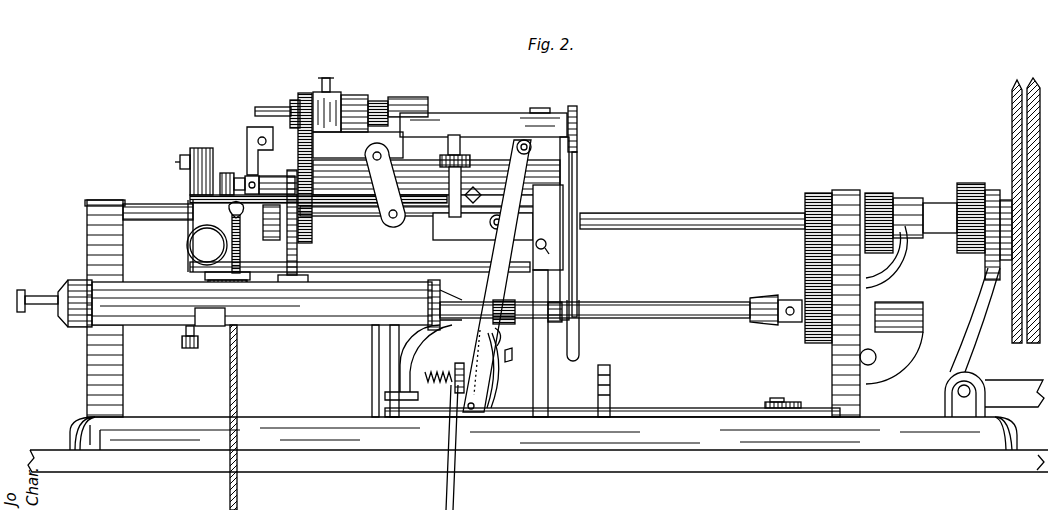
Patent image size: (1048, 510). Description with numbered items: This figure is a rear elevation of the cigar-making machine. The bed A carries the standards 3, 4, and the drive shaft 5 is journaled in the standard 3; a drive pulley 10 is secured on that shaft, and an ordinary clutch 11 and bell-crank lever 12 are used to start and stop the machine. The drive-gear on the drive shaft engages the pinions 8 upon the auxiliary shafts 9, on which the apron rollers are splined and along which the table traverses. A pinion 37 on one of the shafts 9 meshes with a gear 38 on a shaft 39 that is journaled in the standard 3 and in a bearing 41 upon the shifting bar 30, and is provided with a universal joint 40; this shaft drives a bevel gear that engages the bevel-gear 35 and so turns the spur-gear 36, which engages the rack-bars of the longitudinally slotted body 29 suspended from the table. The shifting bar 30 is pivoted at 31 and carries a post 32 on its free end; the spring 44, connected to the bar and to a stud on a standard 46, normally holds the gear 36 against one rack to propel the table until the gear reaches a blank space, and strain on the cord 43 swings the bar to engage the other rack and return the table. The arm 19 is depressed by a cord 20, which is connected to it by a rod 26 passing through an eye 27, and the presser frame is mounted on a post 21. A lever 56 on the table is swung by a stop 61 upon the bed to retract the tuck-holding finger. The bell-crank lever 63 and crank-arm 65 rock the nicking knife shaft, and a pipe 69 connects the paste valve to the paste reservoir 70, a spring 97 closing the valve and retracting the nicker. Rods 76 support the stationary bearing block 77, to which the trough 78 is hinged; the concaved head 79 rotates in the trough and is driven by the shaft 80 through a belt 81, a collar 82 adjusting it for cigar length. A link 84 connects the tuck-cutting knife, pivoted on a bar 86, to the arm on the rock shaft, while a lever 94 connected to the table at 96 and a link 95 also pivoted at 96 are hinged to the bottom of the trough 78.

The standard 3 is at (877, 303).
The standard 4 is at (105, 308).
The drive shaft 5 is at (925, 218).
The pinion 8 is at (879, 212).
The auxiliary shaft 9 is at (464, 217).
The drive pulley 10 is at (1009, 210).
The clutch 11 is at (984, 223).
The bell-crank lever 12 is at (994, 342).
The arm 19 is at (431, 221).
The cord 20 is at (244, 417).
The post 21 is at (466, 176).
The rod 26 is at (192, 198).
The eye 27 is at (234, 246).
The longitudinally slotted body 29 is at (360, 263).
The shifting bar 30 is at (612, 403).
The pivot 31 is at (783, 394).
The post 32 is at (503, 370).
The bevel-gear 35 is at (505, 337).
The spur-gear 36 is at (498, 301).
The pinion 37 is at (815, 258).
The gear 38 is at (790, 328).
The shaft 39 is at (595, 302).
The universal joint 40 is at (764, 301).
The bearing 41 is at (517, 358).
The cord 43 is at (465, 447).
The spring 44 is at (438, 367).
The standard 46 is at (412, 371).
The lever 56 is at (586, 330).
The stop 61 is at (616, 387).
The bell-crank lever 63 is at (189, 171).
The crank-arm 65 is at (240, 172).
The pipe 69 is at (297, 230).
The paste reservoir 70 is at (228, 305).
The rod 76 is at (385, 185).
The bearing block 77 is at (357, 118).
The trough 78 is at (483, 122).
The concaved head 79 is at (384, 105).
The shaft 80 is at (272, 101).
The belt 81 is at (308, 158).
The collar 82 is at (289, 105).
The link 84 is at (573, 229).
The bar 86 is at (577, 112).
The lever 94 is at (497, 298).
The link 95 is at (497, 276).
The connection 96 is at (486, 225).
The spring 97 is at (178, 338).
The bed A is at (538, 444).